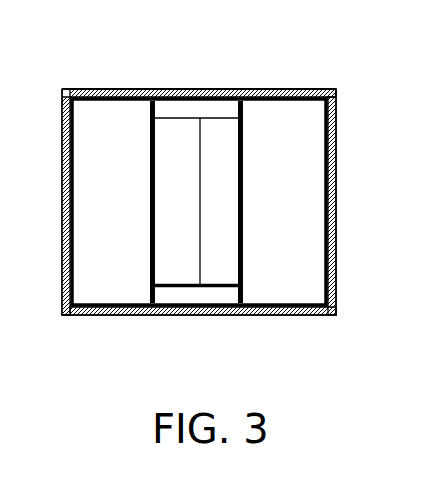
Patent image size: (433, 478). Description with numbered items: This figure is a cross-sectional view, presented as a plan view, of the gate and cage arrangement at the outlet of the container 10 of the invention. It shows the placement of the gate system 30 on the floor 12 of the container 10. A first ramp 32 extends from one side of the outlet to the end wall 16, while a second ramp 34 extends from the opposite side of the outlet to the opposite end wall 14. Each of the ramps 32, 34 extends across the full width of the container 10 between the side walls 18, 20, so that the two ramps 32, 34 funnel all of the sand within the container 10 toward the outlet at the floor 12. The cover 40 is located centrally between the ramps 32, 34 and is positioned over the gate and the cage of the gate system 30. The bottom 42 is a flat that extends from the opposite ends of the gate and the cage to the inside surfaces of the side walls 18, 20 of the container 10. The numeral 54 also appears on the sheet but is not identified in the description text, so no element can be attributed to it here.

The container 10 is at (362, 127).
The floor 12 is at (322, 93).
The end wall 14 is at (338, 185).
The end wall 16 is at (62, 205).
The side wall 18 is at (290, 312).
The side wall 20 is at (245, 98).
The gate system 30 is at (128, 88).
The first ramp 32 is at (130, 202).
The second ramp 34 is at (266, 202).
The cover 40 is at (215, 130).
The bottom 42 is at (175, 110).
The connector 54 is at (432, 425).